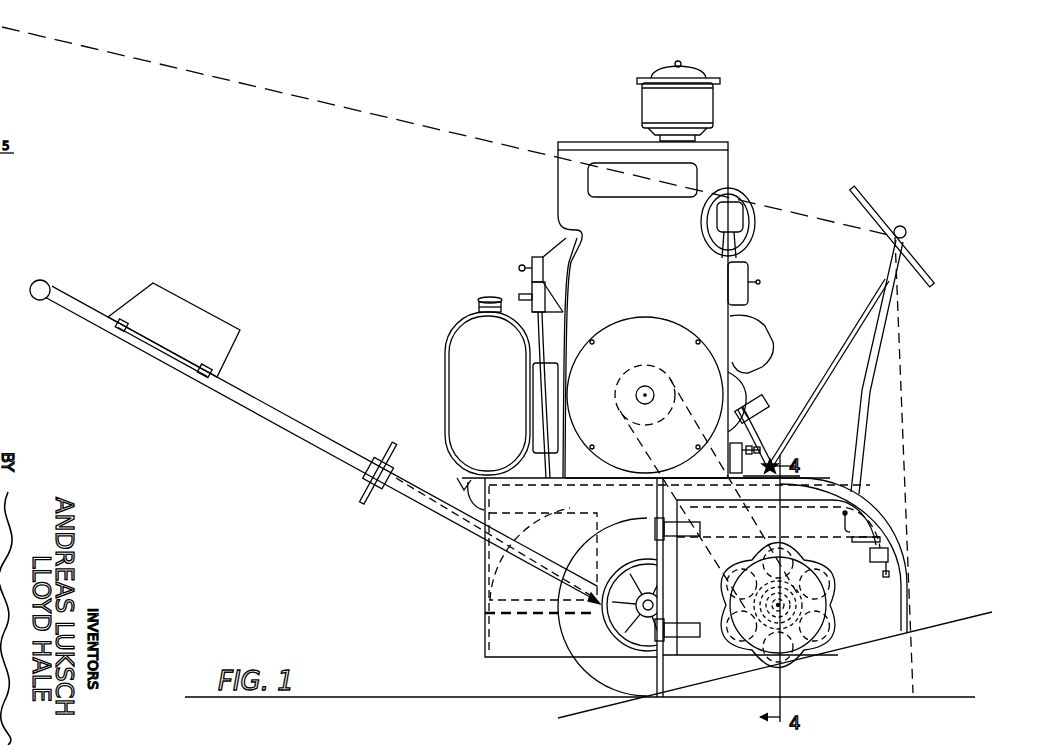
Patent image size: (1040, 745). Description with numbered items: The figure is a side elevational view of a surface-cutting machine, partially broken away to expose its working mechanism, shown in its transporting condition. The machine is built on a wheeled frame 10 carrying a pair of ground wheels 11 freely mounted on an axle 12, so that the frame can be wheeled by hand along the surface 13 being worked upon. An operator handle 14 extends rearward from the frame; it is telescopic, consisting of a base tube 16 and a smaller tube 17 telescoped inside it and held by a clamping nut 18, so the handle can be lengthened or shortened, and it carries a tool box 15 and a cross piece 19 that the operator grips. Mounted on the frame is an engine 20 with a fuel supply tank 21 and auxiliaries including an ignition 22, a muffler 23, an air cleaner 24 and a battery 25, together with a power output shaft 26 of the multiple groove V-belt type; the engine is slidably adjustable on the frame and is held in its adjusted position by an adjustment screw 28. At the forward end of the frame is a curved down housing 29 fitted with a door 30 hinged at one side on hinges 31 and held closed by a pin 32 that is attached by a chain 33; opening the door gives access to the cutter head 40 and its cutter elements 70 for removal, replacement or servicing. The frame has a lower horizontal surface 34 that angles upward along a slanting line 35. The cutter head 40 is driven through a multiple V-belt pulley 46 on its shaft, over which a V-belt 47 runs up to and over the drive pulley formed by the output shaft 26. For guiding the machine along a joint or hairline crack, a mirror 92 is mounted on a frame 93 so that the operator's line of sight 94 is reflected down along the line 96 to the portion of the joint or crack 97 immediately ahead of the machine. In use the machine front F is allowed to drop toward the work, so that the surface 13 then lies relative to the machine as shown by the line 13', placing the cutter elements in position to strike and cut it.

The wheeled frame 10 is at (482, 564).
The ground wheels 11 is at (595, 669).
The axle 12 is at (644, 617).
The surface 13 is at (580, 709).
The line of surface in operating position 13' is at (784, 645).
The operator handle 14 is at (272, 428).
The tool box 15 is at (193, 306).
The base tube 16 is at (421, 507).
The smaller tube 17 is at (347, 449).
The clamping nut 18 is at (394, 470).
The cross piece 19 is at (40, 280).
The engine 20 is at (552, 250).
The fuel supply tank 21 is at (455, 336).
The ignition 22 is at (528, 258).
The muffler 23 is at (738, 197).
The air cleaner 24 is at (710, 108).
The battery 25 is at (532, 514).
The power output shaft 26 is at (643, 367).
The adjustment screw 28 is at (755, 447).
The curved down housing 29 is at (890, 546).
The door 30 is at (815, 497).
The hinges 31 is at (667, 520).
The pin 32 is at (893, 554).
The chain 33 is at (848, 521).
The lower horizontal surface 34 is at (531, 660).
The slanting line 35 is at (858, 650).
The cutter head 40 is at (823, 643).
The multiple V-belt pulley 46 is at (826, 593).
The V-belt 47 is at (633, 436).
The cutter elements 70 is at (846, 602).
The mirror 92 is at (876, 211).
The mirror frame 93 is at (900, 291).
The line of sight 94 is at (285, 93).
The reflected line 96 is at (902, 407).
The portion of joint or crack 97 is at (918, 692).
The machine front F is at (912, 602).